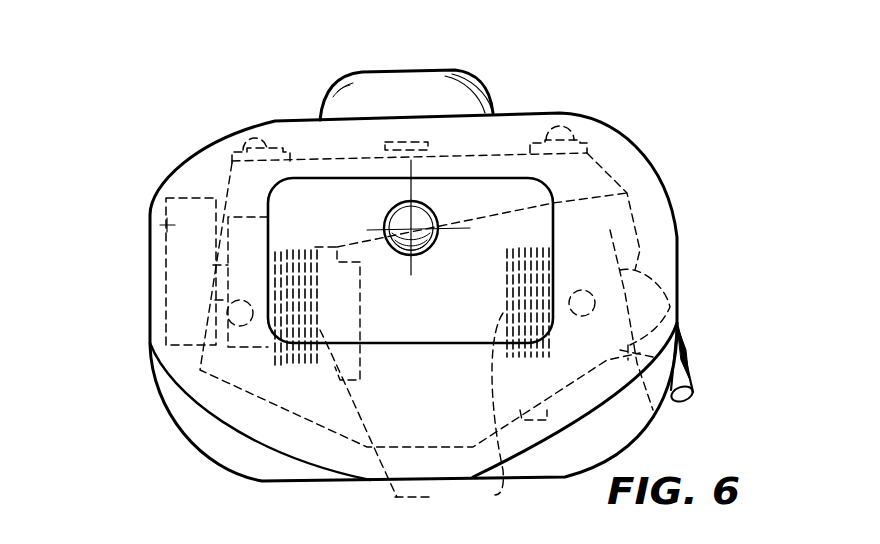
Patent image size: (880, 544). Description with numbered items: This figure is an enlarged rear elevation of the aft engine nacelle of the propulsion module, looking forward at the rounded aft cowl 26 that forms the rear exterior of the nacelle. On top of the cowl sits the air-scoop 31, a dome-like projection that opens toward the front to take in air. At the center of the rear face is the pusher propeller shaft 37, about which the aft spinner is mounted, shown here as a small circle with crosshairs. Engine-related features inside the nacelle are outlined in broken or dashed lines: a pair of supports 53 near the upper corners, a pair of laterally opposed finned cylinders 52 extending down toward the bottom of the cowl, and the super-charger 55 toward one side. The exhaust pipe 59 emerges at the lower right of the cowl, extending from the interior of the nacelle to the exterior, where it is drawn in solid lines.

The aft cowl 26 is at (663, 183).
The air-scoop 31 is at (480, 84).
The pusher propeller shaft 37 is at (400, 205).
The cylinders 52 is at (497, 494).
The supports 53 is at (247, 148).
The super-charger 55 is at (165, 225).
The exhaust pipe 59 is at (695, 354).